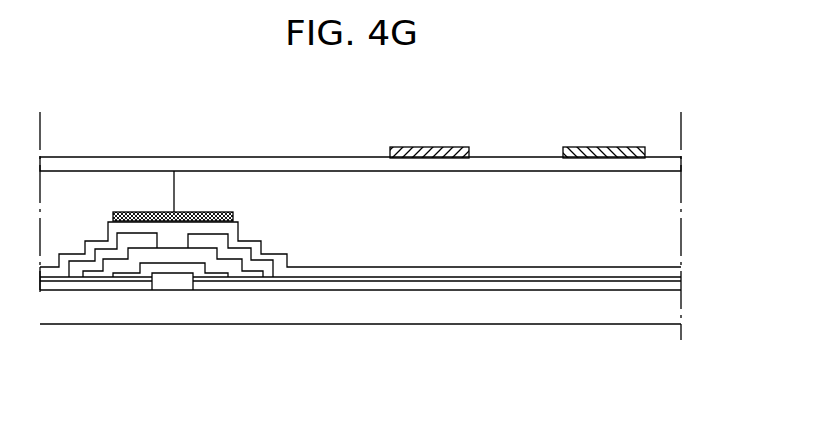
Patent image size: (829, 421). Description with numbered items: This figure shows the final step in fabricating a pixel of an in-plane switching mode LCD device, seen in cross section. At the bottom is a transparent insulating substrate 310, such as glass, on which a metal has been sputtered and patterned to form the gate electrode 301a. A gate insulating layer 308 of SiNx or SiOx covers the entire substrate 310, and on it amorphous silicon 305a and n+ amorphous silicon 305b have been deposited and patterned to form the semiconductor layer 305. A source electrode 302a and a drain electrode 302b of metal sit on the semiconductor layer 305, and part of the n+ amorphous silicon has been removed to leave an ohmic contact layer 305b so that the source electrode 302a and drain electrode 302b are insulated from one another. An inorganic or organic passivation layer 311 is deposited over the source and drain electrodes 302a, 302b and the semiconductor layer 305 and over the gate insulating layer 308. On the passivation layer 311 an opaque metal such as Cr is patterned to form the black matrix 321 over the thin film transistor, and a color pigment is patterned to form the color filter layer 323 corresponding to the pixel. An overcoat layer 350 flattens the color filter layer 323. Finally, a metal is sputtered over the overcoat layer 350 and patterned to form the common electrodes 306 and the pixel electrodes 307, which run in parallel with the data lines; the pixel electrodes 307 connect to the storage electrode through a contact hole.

The gate electrode 301a is at (183, 283).
The source electrode 302a is at (82, 272).
The drain electrode 302b is at (262, 272).
The semiconductor layer 305 is at (173, 327).
The amorphous silicon 305a is at (132, 272).
The ohmic contact layer 305b is at (117, 272).
The common electrode 306 is at (428, 147).
The pixel electrode 307 is at (603, 147).
The gate insulating layer 308 is at (668, 280).
The transparent insulating substrate 310 is at (668, 309).
The passivation layer 311 is at (668, 272).
The black matrix 321 is at (218, 212).
The color filter layer 323 is at (132, 184).
The overcoat layer 350 is at (176, 162).